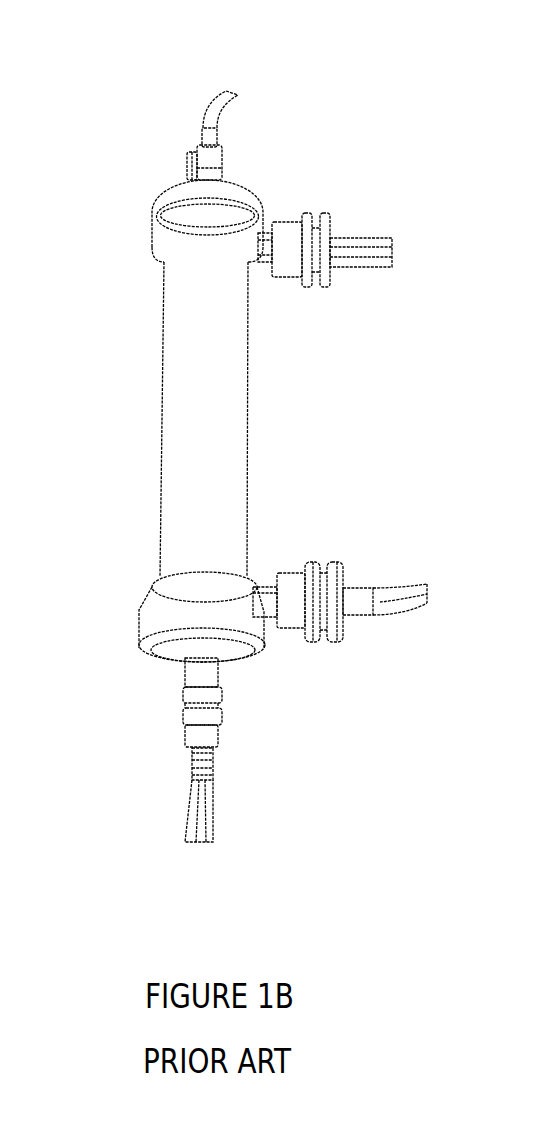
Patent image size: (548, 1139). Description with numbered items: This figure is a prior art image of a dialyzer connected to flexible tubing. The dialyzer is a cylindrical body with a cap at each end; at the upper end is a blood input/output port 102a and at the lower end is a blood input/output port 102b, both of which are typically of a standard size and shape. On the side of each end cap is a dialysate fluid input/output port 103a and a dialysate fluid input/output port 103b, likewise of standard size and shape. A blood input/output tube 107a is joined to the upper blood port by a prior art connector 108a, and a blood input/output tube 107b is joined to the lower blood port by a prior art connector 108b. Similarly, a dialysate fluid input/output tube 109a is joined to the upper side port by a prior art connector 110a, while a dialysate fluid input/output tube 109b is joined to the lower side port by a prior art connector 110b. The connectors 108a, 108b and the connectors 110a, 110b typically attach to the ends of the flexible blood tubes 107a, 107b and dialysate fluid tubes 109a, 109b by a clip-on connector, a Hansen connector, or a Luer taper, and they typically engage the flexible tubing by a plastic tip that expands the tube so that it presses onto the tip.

The blood input/output port 102a is at (196, 183).
The prior art connector 108a is at (203, 145).
The blood input/output tube 107a is at (213, 102).
The dialysate fluid input/output port 103a is at (265, 225).
The prior art connector 110a is at (290, 225).
The dialysate fluid input/output tube 109a is at (373, 248).
The blood input/output port 102b is at (183, 680).
The prior art connector 108b is at (187, 725).
The blood input/output tube 107b is at (187, 808).
The dialysate fluid input/output port 103b is at (263, 588).
The prior art connector 110b is at (290, 570).
The dialysate fluid input/output tube 109b is at (397, 605).